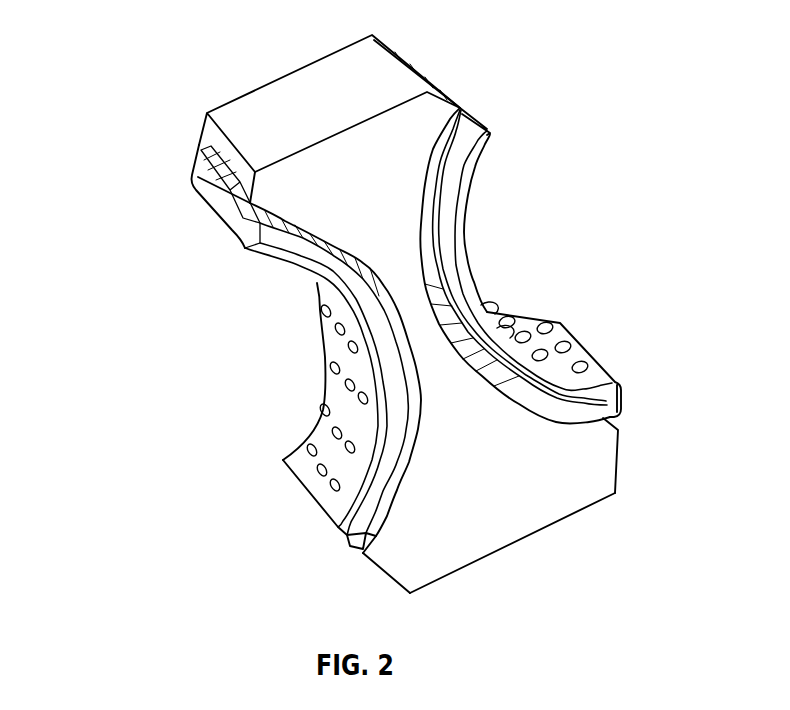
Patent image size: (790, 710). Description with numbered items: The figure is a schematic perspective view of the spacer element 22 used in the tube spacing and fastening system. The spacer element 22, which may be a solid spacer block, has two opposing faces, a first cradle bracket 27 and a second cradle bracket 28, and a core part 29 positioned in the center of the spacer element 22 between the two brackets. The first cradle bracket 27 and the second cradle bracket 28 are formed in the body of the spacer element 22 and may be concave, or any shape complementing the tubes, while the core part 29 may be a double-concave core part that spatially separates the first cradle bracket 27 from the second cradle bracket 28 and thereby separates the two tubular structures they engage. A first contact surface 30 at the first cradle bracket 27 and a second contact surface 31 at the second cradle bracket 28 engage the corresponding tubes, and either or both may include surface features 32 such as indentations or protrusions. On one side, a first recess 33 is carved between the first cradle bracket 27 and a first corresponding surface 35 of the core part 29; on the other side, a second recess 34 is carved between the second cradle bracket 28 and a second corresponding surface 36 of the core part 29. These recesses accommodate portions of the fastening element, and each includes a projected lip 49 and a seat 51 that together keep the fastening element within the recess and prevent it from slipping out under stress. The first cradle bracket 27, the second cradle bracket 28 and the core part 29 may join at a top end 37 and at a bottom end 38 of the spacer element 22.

The spacer element 22 is at (125, 64).
The first cradle bracket 27 is at (303, 508).
The second cradle bracket 28 is at (613, 362).
The core part 29 is at (437, 408).
The first contact surface 30 is at (313, 396).
The second contact surface 31 is at (505, 296).
The surface features 32 is at (549, 325).
The first recess 33 is at (203, 167).
The second recess 34 is at (463, 108).
The first corresponding surface 35 is at (383, 533).
The second corresponding surface 36 is at (558, 424).
The top end 37 is at (306, 80).
The bottom end 38 is at (604, 498).
The projected lip 49 is at (489, 128).
The seat 51 is at (453, 92).